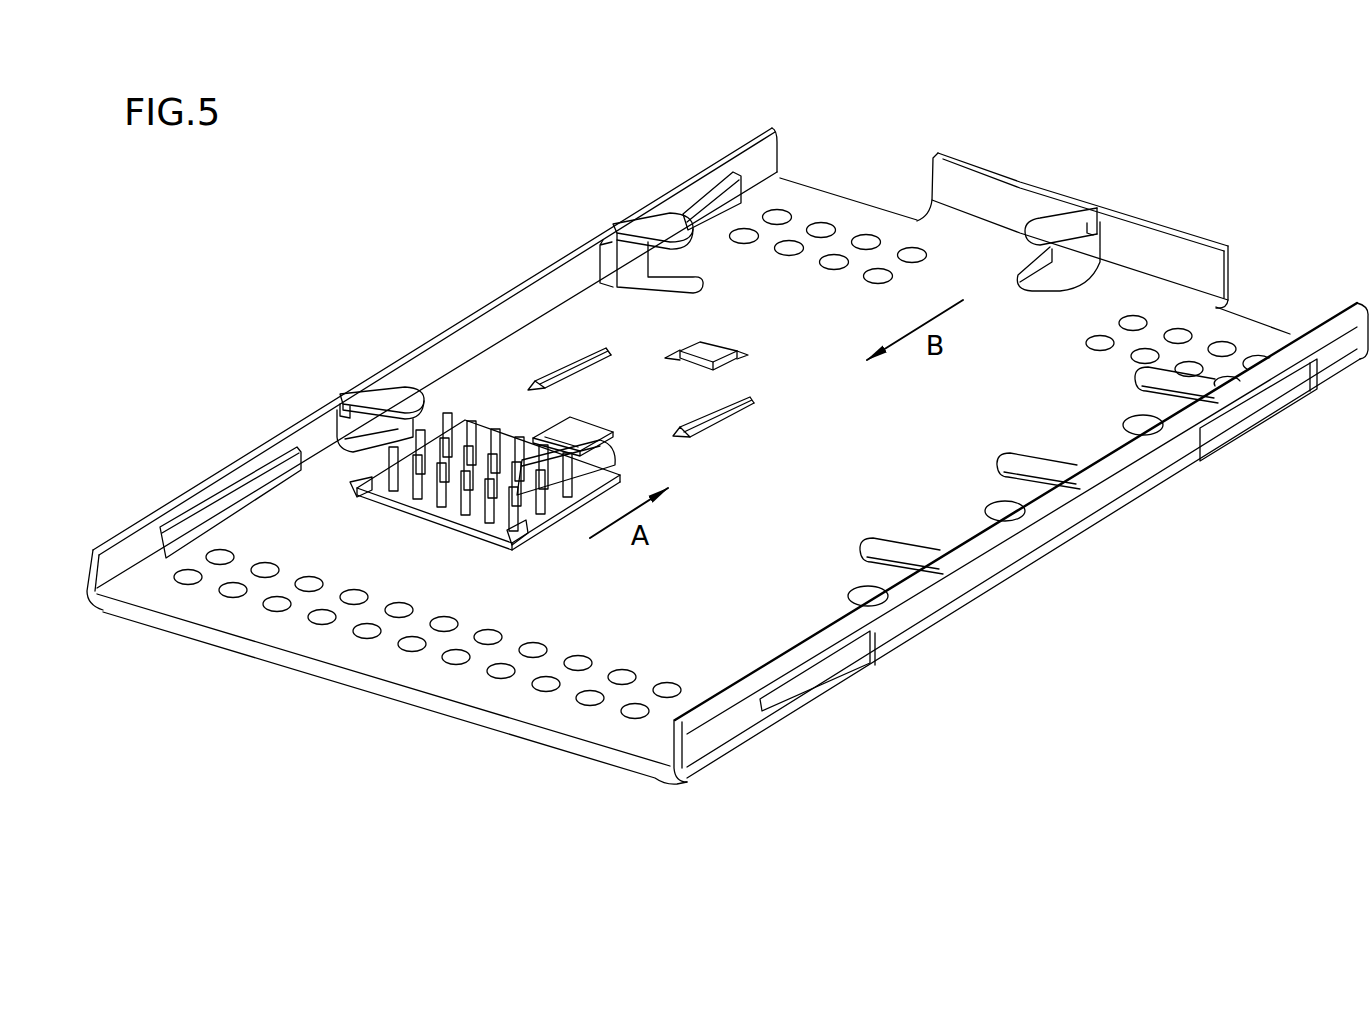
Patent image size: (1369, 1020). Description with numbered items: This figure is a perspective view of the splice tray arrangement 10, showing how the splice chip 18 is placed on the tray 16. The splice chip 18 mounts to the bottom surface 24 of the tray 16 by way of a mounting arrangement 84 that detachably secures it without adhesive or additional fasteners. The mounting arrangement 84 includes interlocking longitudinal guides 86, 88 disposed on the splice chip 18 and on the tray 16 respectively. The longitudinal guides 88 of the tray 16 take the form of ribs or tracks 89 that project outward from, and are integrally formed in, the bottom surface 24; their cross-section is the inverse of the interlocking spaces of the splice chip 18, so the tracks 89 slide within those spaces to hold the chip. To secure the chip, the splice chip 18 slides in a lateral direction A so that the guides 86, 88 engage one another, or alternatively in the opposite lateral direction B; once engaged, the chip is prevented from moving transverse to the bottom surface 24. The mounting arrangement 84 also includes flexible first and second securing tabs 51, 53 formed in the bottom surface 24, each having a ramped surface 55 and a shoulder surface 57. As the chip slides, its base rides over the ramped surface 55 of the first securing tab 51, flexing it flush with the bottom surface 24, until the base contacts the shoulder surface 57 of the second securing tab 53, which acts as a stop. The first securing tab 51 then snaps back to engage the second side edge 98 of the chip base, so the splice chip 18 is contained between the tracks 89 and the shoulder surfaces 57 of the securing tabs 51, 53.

The splice tray arrangement 10 is at (352, 268).
The tray 16 is at (987, 597).
The splice chip 18 is at (442, 400).
The bottom surface 24 is at (687, 595).
The first securing tab 51 is at (600, 438).
The second securing tab 53 is at (699, 343).
The ramped surface 55 is at (570, 433).
The shoulder surface 57 is at (695, 360).
The mounting arrangement 84 is at (575, 468).
The longitudinal guides of the splice chip 86 is at (360, 488).
The longitudinal guides of the tray 88 is at (560, 370).
The tracks 89 is at (592, 357).
The second side edge 98 is at (440, 527).